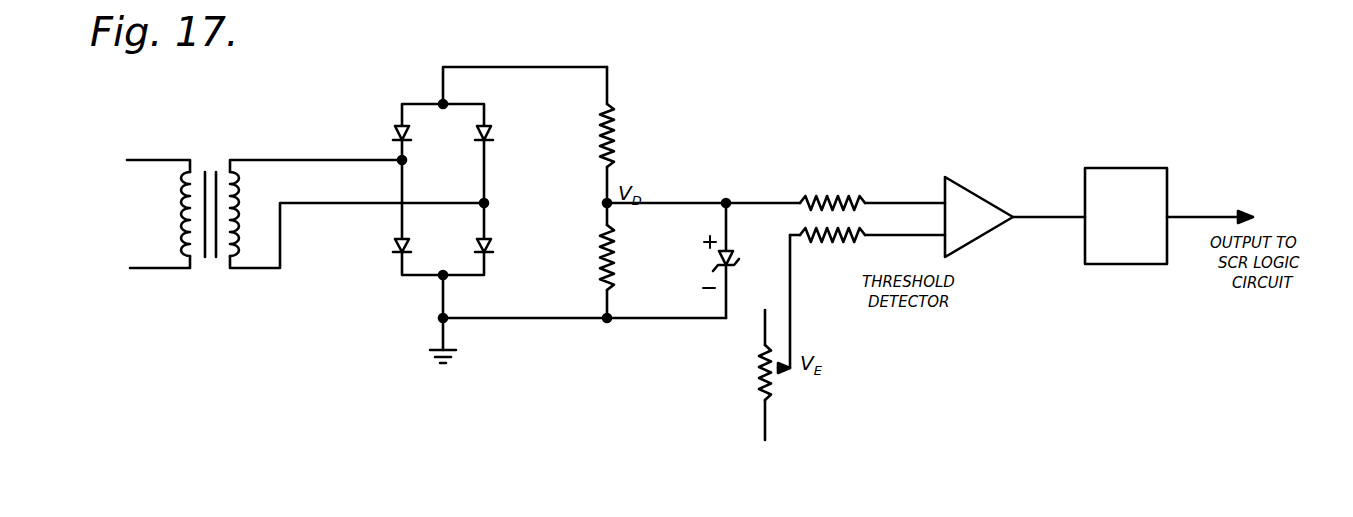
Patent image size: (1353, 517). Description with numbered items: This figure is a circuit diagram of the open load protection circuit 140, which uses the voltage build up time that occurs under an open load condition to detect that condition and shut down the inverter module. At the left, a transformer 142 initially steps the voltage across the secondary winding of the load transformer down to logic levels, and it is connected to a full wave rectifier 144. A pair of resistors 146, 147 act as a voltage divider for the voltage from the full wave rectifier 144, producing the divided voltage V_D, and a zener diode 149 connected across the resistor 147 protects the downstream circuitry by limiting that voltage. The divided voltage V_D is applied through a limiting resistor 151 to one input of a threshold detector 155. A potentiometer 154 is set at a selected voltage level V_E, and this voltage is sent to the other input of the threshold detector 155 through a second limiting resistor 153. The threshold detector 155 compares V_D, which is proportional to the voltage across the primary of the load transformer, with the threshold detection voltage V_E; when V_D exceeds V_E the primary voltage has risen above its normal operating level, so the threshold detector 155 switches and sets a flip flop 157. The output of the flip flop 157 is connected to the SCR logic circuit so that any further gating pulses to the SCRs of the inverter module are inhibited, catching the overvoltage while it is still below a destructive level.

The open load protection circuit 140 is at (718, 141).
The transformer 142 is at (203, 264).
The full wave rectifier 144 is at (418, 278).
The resistor 146 is at (612, 126).
The resistor 147 is at (612, 266).
The zener diode 149 is at (737, 256).
The limiting resistor 151 is at (835, 198).
The limiting resistor 153 is at (823, 242).
The potentiometer 154 is at (780, 385).
The threshold detector 155 is at (965, 183).
The flip flop 157 is at (1140, 168).